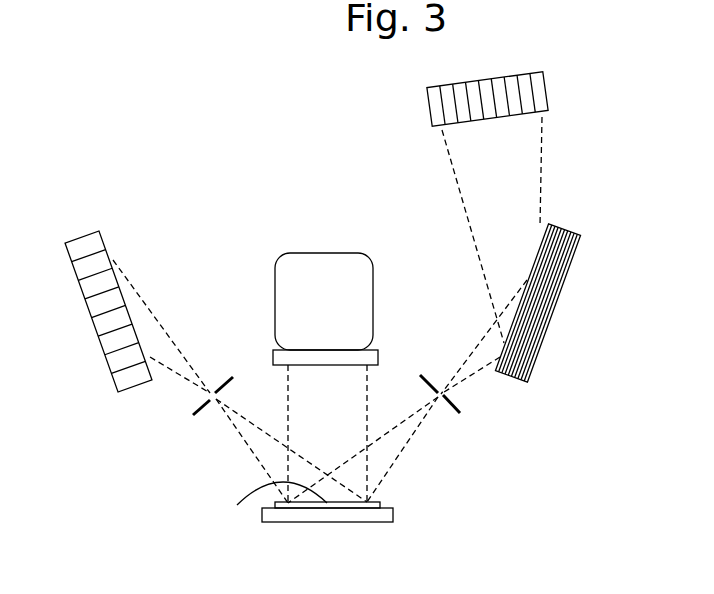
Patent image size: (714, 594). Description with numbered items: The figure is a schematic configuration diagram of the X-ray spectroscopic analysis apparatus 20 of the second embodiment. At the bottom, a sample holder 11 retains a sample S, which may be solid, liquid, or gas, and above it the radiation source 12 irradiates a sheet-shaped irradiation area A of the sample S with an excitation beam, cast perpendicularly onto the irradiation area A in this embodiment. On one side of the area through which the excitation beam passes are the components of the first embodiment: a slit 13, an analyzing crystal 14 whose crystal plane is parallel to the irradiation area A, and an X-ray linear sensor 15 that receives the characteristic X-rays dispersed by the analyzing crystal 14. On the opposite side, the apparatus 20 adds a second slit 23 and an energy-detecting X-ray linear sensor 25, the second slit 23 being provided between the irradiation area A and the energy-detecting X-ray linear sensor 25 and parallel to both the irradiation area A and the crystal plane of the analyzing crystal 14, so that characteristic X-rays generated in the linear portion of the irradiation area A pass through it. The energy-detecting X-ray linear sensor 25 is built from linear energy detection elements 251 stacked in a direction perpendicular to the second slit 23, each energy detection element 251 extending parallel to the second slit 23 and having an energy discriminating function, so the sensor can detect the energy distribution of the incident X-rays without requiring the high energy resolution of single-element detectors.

The sample holder 11 is at (392, 513).
The radiation source 12 is at (297, 283).
The slit 13 is at (450, 413).
The analyzing crystal 14 is at (552, 295).
The X-ray linear sensor 15 is at (550, 88).
The X-ray spectroscopic analysis apparatus 20 is at (508, 487).
The second slit 23 is at (202, 415).
The energy-detecting X-ray linear sensor 25 is at (82, 235).
The energy detection elements 251 is at (98, 302).
The sample S is at (277, 504).
The irradiation area A is at (367, 527).